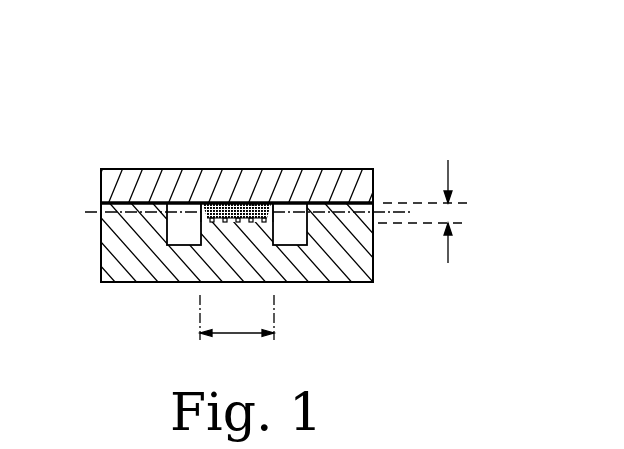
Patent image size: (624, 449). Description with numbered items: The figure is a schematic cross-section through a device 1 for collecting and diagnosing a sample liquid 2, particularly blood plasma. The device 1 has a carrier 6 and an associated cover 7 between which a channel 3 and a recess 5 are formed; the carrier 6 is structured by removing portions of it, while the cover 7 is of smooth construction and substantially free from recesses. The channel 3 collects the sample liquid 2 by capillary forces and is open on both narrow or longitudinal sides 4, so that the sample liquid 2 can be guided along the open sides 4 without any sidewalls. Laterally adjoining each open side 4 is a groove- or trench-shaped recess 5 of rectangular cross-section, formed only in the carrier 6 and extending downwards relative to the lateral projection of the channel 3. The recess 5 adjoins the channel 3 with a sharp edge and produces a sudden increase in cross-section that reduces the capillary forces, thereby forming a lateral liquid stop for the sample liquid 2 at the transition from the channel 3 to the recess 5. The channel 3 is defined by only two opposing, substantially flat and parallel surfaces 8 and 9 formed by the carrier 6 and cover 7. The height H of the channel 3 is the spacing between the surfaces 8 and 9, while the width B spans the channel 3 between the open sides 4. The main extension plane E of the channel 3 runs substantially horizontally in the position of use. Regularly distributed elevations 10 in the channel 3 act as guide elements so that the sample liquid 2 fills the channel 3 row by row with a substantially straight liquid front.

The device 1 is at (113, 112).
The sample liquid 2 is at (233, 203).
The channel 3 is at (218, 203).
The narrow or longitudinal side 4 is at (200, 203).
The recess 5 is at (173, 228).
The carrier 6 is at (117, 238).
The cover 7 is at (311, 188).
The flat side 8 is at (255, 225).
The flat side 9 is at (257, 202).
The elevations 10 is at (251, 224).
The width of the channel B is at (237, 317).
The height of the channel H is at (450, 213).
The main extension plane E is at (395, 213).